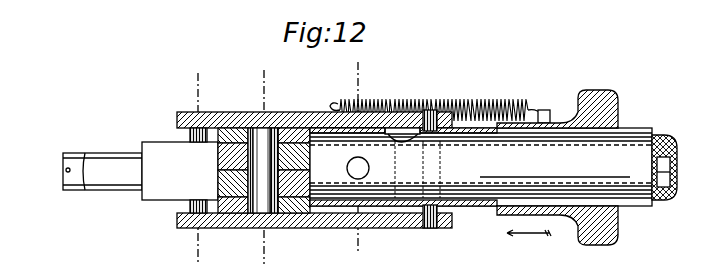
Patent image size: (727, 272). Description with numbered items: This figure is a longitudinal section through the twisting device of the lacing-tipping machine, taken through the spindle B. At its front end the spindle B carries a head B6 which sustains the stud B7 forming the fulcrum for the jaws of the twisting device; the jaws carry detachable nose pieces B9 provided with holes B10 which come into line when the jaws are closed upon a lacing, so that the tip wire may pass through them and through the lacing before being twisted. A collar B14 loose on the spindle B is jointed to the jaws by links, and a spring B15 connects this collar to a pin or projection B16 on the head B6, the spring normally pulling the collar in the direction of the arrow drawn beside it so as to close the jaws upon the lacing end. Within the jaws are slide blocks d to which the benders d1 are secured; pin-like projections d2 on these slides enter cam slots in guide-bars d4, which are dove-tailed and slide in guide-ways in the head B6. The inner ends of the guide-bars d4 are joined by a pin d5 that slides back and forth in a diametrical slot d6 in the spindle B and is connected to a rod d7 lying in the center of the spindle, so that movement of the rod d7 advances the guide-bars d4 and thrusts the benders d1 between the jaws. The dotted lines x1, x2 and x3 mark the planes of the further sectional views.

The slide block d is at (162, 143).
The bender d1 is at (107, 178).
The pin-like projection d2 is at (197, 228).
The guide-bar d4 is at (383, 228).
The pin d5 is at (435, 228).
The diametrical slot d6 is at (405, 133).
The rod d7 is at (673, 148).
The spindle B is at (643, 130).
The head B6 is at (244, 210).
The stud B7 is at (273, 203).
The nose piece B9 is at (78, 183).
The hole B10 is at (67, 172).
The collar B14 is at (587, 245).
The spring B15 is at (498, 106).
The pin or projection B16 is at (330, 104).
The dotted line x1 is at (353, 157).
The dotted line x2 is at (262, 164).
The dotted line x3 is at (195, 164).